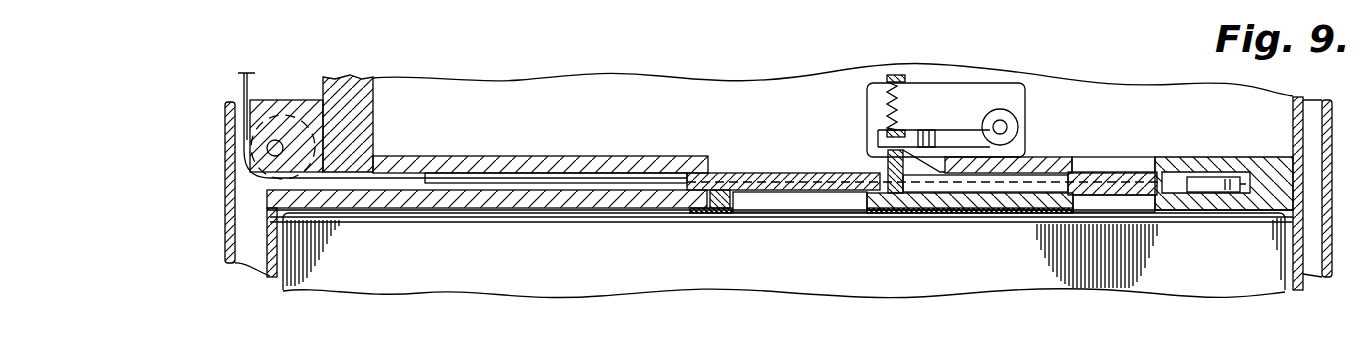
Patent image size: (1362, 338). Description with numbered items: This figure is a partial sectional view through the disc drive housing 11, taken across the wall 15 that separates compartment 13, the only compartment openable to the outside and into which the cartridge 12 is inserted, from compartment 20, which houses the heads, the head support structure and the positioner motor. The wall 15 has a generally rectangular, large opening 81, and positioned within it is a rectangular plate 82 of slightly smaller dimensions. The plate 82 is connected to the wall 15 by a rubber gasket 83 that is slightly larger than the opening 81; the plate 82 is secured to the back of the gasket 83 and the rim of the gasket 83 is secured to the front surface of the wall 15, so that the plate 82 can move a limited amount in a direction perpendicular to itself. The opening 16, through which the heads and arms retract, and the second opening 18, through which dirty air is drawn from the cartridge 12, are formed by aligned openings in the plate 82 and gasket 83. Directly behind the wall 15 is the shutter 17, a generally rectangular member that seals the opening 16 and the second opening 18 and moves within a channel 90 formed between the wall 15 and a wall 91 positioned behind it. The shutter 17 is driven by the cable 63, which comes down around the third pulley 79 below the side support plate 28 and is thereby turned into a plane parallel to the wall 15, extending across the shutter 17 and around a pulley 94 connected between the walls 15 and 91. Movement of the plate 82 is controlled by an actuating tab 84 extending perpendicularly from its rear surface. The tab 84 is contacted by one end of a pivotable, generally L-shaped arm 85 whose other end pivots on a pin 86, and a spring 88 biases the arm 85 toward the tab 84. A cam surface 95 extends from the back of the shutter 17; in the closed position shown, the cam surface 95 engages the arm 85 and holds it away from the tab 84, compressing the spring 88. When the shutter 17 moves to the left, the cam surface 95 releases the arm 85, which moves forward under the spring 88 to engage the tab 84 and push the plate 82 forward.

The housing 11 is at (228, 196).
The cartridge 12 is at (315, 283).
The compartment 13 is at (280, 212).
The wall 15 is at (565, 198).
The opening 16 is at (790, 202).
The shutter 17 is at (785, 175).
The second opening 18 is at (1140, 205).
The compartment 20 is at (517, 88).
The side support plate 28 is at (358, 113).
The cable 63 is at (250, 82).
The third pulley 79 is at (245, 150).
The opening 81 is at (718, 207).
The plate 82 is at (945, 202).
The rubber gasket 83 is at (1000, 215).
The actuating tab 84 is at (885, 155).
The L-shaped arm 85 is at (955, 140).
The pin 86 is at (1005, 128).
The spring 88 is at (893, 100).
The channel 90 is at (608, 175).
The wall 91 is at (500, 160).
The pulley 94 is at (1200, 180).
The cam surface 95 is at (905, 155).